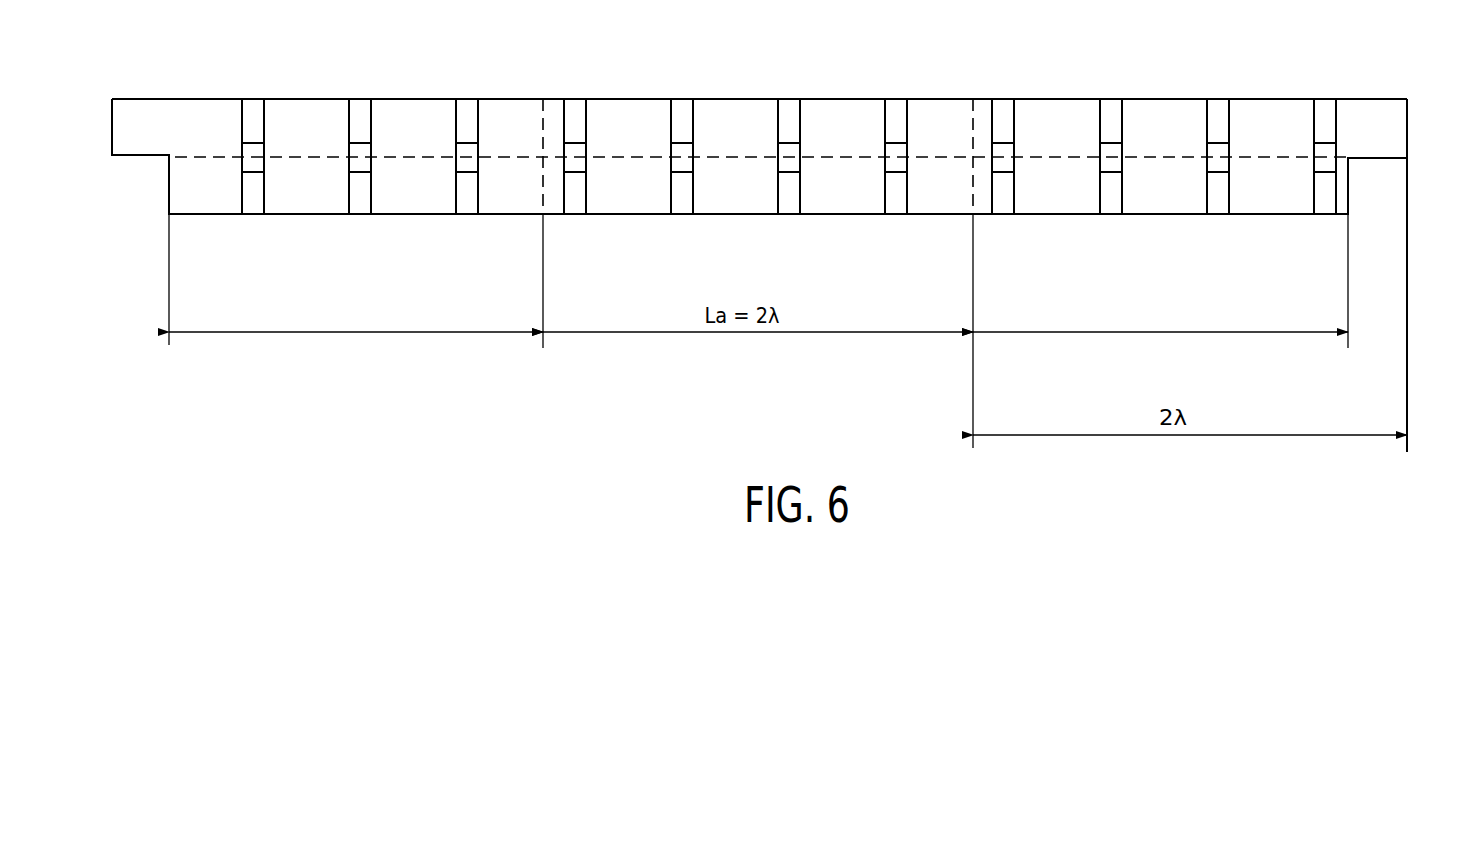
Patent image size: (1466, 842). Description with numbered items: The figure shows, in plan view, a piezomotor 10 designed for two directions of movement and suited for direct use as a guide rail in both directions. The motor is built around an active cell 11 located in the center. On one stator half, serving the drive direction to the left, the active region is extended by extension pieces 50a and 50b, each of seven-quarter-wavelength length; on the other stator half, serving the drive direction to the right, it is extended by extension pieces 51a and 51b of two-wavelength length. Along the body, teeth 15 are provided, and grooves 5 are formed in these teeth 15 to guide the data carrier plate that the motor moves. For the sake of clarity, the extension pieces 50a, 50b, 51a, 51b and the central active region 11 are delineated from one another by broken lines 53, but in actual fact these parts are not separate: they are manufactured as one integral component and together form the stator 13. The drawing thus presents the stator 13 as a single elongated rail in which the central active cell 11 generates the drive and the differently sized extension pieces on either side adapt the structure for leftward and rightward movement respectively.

The piezomotor 10 is at (1418, 116).
The active cell 11 is at (737, 120).
The stator 13 is at (1407, 137).
The teeth 15 is at (681, 120).
The grooves 5 is at (903, 150).
The extension piece 51a is at (181, 117).
The extension piece 51b is at (1169, 120).
The broken lines 53 is at (543, 120).
The extension piece 50a is at (304, 192).
The extension piece 50b is at (1058, 195).